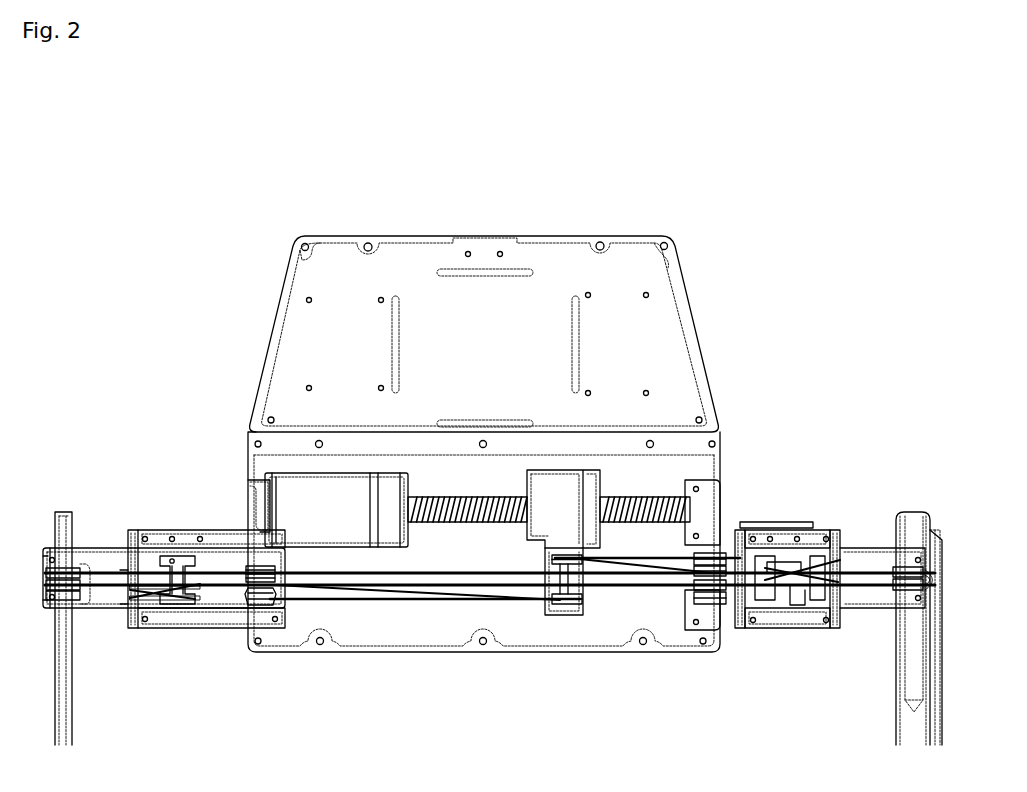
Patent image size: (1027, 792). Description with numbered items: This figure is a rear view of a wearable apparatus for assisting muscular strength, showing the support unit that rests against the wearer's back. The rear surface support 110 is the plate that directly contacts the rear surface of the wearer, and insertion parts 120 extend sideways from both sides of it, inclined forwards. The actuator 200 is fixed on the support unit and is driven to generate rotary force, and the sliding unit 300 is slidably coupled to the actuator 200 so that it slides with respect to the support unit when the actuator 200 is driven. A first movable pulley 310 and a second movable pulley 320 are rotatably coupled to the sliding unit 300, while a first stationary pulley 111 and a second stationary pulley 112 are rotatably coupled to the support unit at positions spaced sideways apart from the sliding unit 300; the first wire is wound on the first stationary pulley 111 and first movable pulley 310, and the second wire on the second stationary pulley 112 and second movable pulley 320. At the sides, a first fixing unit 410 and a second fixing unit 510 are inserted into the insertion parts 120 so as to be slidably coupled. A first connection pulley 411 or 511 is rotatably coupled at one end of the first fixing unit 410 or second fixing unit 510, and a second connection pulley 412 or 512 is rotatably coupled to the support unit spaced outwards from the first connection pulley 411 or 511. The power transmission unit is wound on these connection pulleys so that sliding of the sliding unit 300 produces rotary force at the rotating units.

The rear surface support 110 is at (555, 236).
The first stationary pulley 111 is at (710, 610).
The second stationary pulley 112 is at (262, 608).
The insertion parts 120 is at (172, 530).
The actuator 200 is at (300, 480).
The sliding unit 300 is at (573, 488).
The first movable pulley 310 is at (565, 555).
The second movable pulley 320 is at (562, 612).
The first fixing unit 410 is at (912, 515).
The first connection pulley 411 is at (793, 590).
The second connection pulley 412 is at (830, 540).
The second fixing unit 510 is at (97, 548).
The first connection pulley 511 is at (197, 606).
The second connection pulley 512 is at (148, 604).